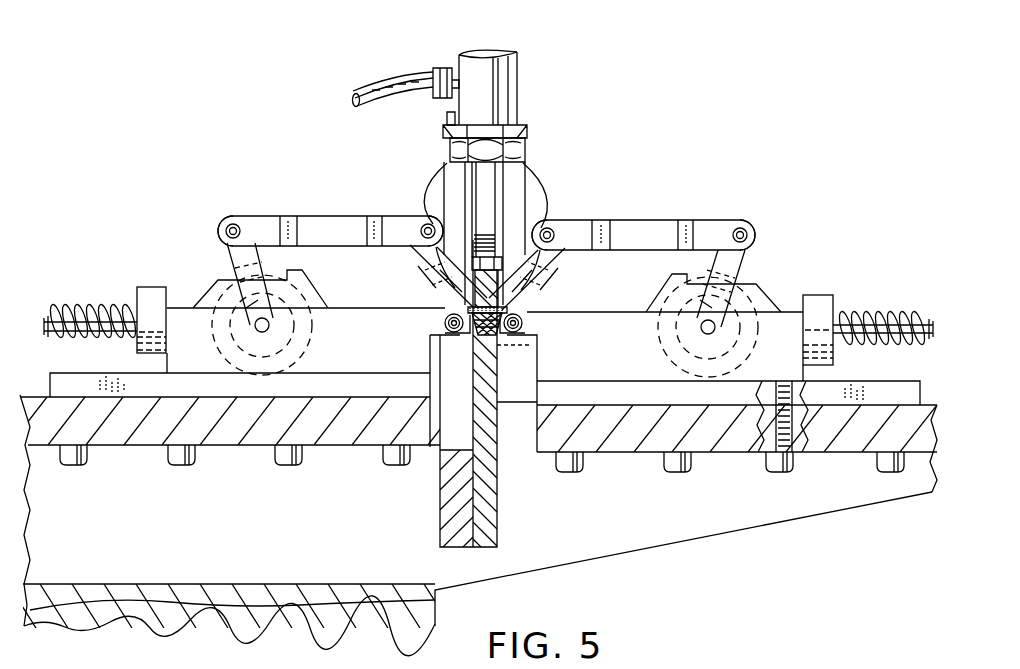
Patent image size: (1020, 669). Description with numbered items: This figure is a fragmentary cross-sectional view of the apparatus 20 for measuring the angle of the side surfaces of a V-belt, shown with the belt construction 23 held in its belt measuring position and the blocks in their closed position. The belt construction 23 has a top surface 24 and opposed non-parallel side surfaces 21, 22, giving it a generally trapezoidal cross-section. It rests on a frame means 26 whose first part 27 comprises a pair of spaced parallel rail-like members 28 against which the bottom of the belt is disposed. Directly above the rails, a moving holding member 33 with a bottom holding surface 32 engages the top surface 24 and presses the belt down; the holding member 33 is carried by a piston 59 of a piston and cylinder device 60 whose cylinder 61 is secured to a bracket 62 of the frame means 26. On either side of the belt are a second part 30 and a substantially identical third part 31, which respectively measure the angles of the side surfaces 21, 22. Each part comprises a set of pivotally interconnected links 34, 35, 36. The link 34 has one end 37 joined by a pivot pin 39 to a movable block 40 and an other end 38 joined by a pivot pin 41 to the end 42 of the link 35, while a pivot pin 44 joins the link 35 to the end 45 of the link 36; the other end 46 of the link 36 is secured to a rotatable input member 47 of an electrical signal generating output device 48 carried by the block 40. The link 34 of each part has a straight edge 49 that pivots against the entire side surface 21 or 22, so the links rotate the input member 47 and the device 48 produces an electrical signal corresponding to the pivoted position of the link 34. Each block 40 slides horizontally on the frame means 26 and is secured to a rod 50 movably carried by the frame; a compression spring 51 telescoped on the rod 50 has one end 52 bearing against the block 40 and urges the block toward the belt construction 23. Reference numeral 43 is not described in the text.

The apparatus 20 is at (748, 110).
The side surface 21 is at (473, 327).
The side surface 22 is at (528, 322).
The belt construction 23 is at (475, 333).
The top surface 24 is at (473, 300).
The frame means 26 is at (725, 512).
The first part 27 is at (498, 418).
The rail-like members 28 is at (500, 350).
The second part 30 is at (336, 178).
The third part 31 is at (660, 187).
The bottom holding surface 32 is at (510, 305).
The holding member 33 is at (510, 292).
The link 34 is at (468, 300).
The link 35 is at (318, 217).
The link 36 is at (243, 262).
The end 37 is at (445, 323).
The end 38 is at (425, 248).
The pivot pin 39 is at (446, 329).
The movable block 40 is at (307, 365).
The pivot pin 41 is at (425, 224).
The end 42 is at (432, 220).
The pin head 43 is at (262, 221).
The pivot pin 44 is at (232, 221).
The end 45 is at (228, 240).
The end 46 is at (253, 302).
The rotatable input member 47 is at (256, 328).
The electrical signal generating output device 48 is at (306, 290).
The straight edge 49 is at (445, 185).
The rod 50 is at (48, 304).
The compression spring 51 is at (66, 300).
The end 52 is at (137, 290).
The piston 59 is at (496, 178).
The piston and cylinder device 60 is at (540, 67).
The cylinder 61 is at (522, 90).
The bracket 62 is at (527, 130).